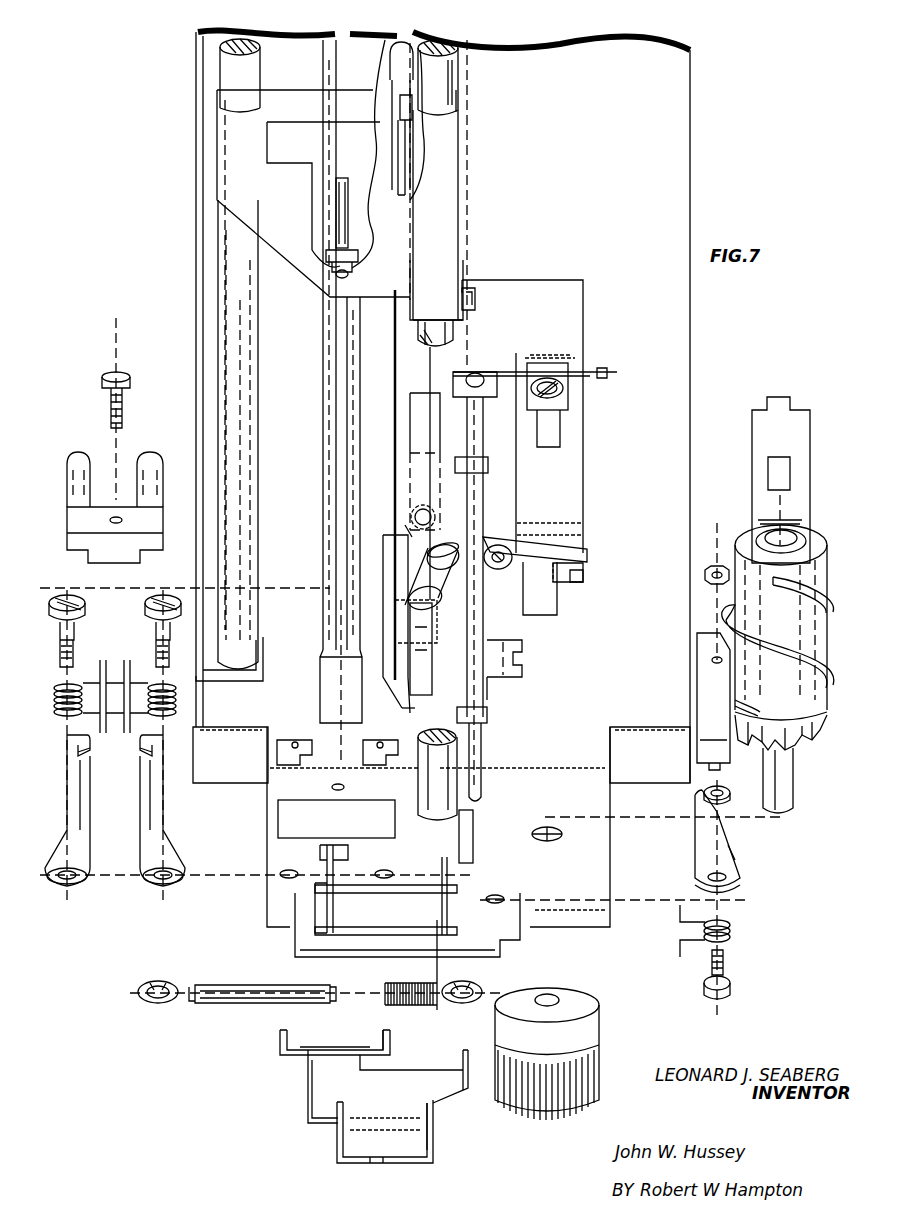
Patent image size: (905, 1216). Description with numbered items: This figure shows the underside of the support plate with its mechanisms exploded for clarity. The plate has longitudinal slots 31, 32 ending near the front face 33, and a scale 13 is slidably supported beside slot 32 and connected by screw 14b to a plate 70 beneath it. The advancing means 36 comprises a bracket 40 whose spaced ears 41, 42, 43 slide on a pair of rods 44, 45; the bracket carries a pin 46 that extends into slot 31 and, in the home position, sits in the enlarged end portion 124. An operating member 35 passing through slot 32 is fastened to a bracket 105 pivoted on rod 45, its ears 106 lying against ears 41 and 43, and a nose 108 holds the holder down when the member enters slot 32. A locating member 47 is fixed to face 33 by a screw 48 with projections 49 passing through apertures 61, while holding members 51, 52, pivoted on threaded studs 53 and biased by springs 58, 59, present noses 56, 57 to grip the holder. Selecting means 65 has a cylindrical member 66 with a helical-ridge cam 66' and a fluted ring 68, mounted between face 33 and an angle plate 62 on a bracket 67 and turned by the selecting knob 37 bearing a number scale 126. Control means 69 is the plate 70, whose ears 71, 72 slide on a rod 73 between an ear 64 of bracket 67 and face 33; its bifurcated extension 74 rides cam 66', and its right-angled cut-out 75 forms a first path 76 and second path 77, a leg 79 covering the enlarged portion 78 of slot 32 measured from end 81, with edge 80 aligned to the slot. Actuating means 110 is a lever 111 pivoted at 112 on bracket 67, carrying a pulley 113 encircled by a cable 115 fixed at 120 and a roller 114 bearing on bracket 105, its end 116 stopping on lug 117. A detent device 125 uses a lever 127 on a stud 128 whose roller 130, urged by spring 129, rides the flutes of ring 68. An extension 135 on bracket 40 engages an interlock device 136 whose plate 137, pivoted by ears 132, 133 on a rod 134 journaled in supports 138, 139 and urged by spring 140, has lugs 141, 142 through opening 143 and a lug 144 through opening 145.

The scale 13 is at (460, 35).
The front face 33 is at (588, 862).
The ear 42 is at (222, 95).
The rod 44 is at (258, 390).
The advancing means 36 is at (296, 200).
The pin 46 is at (348, 197).
The longitudinal slot 31 is at (337, 66).
The longitudinal slot 32 is at (400, 418).
The rod 45 is at (458, 63).
The ear 41 is at (460, 96).
The bracket 40 is at (467, 206).
The ear 43 is at (466, 325).
The extension 135 is at (472, 290).
The bracket 67 is at (583, 315).
The cable fixing point 120 is at (549, 360).
The ear 64 is at (488, 390).
The rod 73 is at (483, 617).
The ear 71 is at (488, 465).
The ear 72 is at (487, 716).
The bifurcated extension 74 is at (515, 677).
The control means 69 is at (502, 687).
The actuating means 110 is at (557, 529).
The lever 111 is at (525, 560).
The pivot 112 is at (498, 543).
The pulley 113 is at (440, 568).
The roller 114 is at (432, 608).
The end 116 is at (583, 565).
The stop lug 117 is at (583, 583).
The cable 115 is at (430, 363).
The edge 80 is at (428, 457).
The screw 14b is at (414, 516).
The second path 77 is at (407, 530).
The plate 70 is at (387, 563).
The leg 79 is at (390, 597).
The first path 76 is at (415, 618).
The enlarged portion 78 is at (435, 617).
The end 81 is at (420, 637).
The right-angled cut-out 75 is at (417, 663).
The enlarged end portion 124 is at (320, 690).
The aperture 61 is at (296, 742).
The opening 145 is at (473, 832).
The opening 143 is at (290, 815).
The support 138 is at (333, 900).
The support 139 is at (442, 906).
The spring 140 is at (425, 990).
The rod 134 is at (262, 986).
The number scale 126 is at (490, 1012).
The lug 141 is at (285, 1035).
The lug 142 is at (392, 1042).
The interlock device 136 is at (402, 1055).
The plate 137 is at (318, 1080).
The ear 132 is at (337, 1150).
The ear 133 is at (433, 1148).
The lug 144 is at (468, 1075).
The selecting knob 37 is at (532, 1105).
The operating member 35 is at (395, 58).
The nose 108 is at (392, 110).
The ear 106 is at (412, 108).
The bracket 105 is at (405, 175).
The screw 48 is at (122, 400).
The projection 49 is at (72, 455).
The locating member 47 is at (158, 518).
The threaded stud 53 is at (145, 603).
The spring 58 is at (82, 687).
The spring 59 is at (150, 687).
The holding member 51 is at (78, 817).
The holding member 52 is at (150, 822).
The nose 56 is at (80, 754).
The nose 57 is at (143, 754).
The angle plate 62 is at (752, 447).
The selecting means 65 is at (823, 518).
The cylindrical member 66 is at (781, 617).
The helical-ridge cam 66' is at (778, 646).
The fluted ring 68 is at (805, 745).
The roller 130 is at (745, 785).
The lever 127 is at (695, 845).
The detent device 125 is at (748, 866).
The spring 129 is at (730, 924).
The threaded stud 128 is at (726, 965).